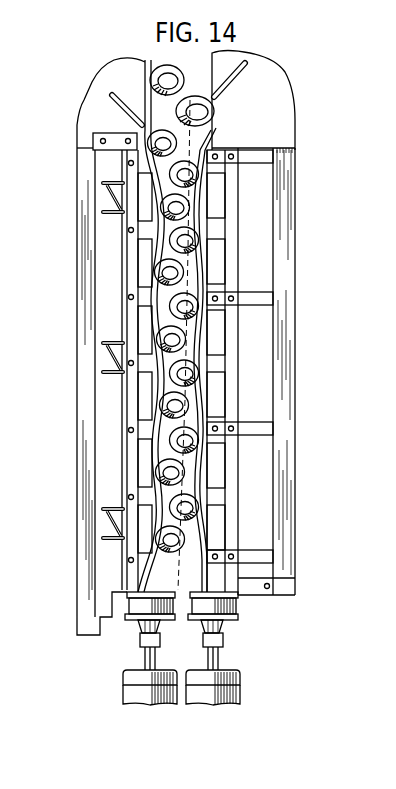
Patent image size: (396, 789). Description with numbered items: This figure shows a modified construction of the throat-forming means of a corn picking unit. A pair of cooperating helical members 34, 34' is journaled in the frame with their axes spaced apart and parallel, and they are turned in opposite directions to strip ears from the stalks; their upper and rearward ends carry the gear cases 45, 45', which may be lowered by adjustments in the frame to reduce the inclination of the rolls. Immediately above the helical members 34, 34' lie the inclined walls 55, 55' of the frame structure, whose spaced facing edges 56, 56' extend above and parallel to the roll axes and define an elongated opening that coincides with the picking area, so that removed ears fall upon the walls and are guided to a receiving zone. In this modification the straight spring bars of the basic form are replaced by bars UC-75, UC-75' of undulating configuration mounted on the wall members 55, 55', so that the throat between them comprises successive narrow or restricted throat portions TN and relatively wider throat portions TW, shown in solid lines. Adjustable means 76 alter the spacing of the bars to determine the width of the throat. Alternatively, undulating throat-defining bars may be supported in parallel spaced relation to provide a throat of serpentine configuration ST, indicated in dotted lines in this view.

The inclined wall 55 is at (263, 101).
The inclined wall 55' is at (110, 95).
The facing edge 56 is at (225, 345).
The facing edge 56' is at (141, 312).
The helical member 34 is at (177, 69).
The helical member 34' is at (195, 96).
The adjustable means 76 is at (118, 205).
The undulating bar UC-75 is at (277, 361).
The undulating bar UC-75' is at (85, 363).
The serpentine throat ST is at (233, 283).
The narrow throat portion TN is at (197, 343).
The wide throat portion TW is at (185, 413).
The gear case 45 is at (150, 662).
The gear case 45' is at (213, 662).